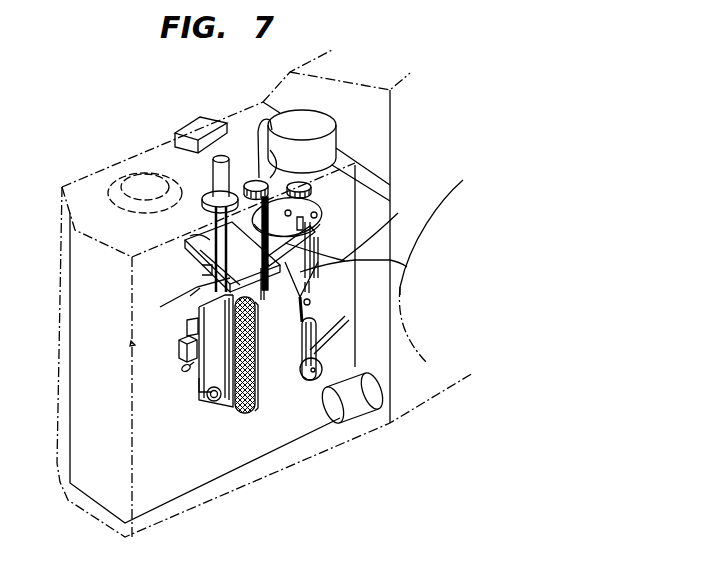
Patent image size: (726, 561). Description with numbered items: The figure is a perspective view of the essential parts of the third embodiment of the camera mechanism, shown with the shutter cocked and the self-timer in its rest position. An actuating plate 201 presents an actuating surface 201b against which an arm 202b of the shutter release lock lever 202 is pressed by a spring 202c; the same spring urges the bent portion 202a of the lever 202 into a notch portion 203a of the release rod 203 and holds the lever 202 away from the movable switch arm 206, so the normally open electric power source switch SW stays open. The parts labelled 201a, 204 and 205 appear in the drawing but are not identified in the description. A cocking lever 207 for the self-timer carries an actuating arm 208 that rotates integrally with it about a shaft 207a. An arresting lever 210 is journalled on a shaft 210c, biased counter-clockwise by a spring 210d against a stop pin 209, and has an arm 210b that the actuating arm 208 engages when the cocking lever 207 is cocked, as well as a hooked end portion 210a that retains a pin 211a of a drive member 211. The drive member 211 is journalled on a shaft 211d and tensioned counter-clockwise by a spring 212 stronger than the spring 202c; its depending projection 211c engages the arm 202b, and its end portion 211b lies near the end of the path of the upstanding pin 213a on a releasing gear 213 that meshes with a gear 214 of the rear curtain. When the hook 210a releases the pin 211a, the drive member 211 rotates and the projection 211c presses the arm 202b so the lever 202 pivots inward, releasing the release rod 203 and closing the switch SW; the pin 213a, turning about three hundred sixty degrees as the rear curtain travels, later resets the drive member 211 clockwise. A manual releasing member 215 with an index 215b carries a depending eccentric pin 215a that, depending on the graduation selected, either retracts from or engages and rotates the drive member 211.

The actuating plate 201 is at (262, 400).
The slide frame 201a is at (207, 405).
The actuating surface 201b is at (190, 296).
The shutter release lock lever 202 is at (205, 282).
The bent portion 202a is at (195, 235).
The arm 202b is at (304, 340).
The spring 202c is at (199, 378).
The release rod 203 is at (212, 192).
The notch portion 203a is at (190, 236).
The switch actuating screw 204 is at (181, 369).
The switch body 205 is at (179, 347).
The electric power source switch SW is at (119, 349).
The movable switch arm 206 is at (187, 326).
The cocking lever 207 is at (300, 371).
The shaft 207a is at (310, 386).
The actuating arm 208 is at (330, 331).
The stop pin 209 is at (310, 302).
The arresting lever 210 is at (350, 274).
The hooked end portion 210a is at (430, 233).
The arm 210b is at (304, 355).
The shaft 210c is at (309, 287).
The spring 210d is at (404, 272).
The drive member 211 is at (295, 244).
The pin 211a is at (280, 252).
The end portion 211b is at (306, 240).
The depending projection 211c is at (279, 294).
The shaft 211d is at (202, 270).
The spring 212 is at (251, 243).
The releasing gear 213 is at (312, 200).
The upstanding pin 213a is at (317, 215).
The gear of the rear curtain 214 is at (310, 184).
The manual releasing member 215 is at (255, 175).
The eccentric pin 215a is at (302, 141).
The index 215b is at (252, 129).